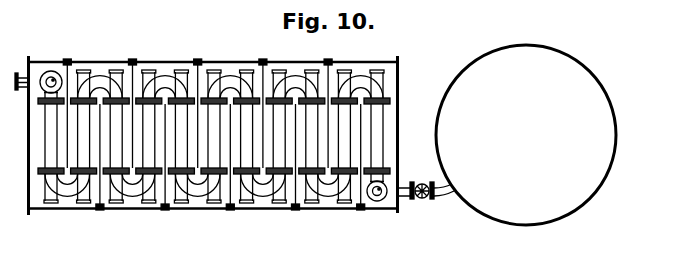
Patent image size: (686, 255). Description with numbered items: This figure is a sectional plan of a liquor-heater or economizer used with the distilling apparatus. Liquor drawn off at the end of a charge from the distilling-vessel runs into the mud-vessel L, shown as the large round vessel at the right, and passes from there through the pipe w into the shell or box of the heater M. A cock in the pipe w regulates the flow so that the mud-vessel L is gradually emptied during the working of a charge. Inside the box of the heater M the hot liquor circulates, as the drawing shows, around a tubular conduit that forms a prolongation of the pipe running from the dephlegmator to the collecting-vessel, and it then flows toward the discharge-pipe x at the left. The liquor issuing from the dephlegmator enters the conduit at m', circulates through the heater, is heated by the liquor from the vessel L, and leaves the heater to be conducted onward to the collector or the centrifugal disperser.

The liquor heater M is at (215, 135).
The inlet end of tubular conduit m' is at (64, 68).
The discharge-pipe x is at (16, 82).
The pipe w is at (426, 184).
The mud-vessel L is at (526, 135).